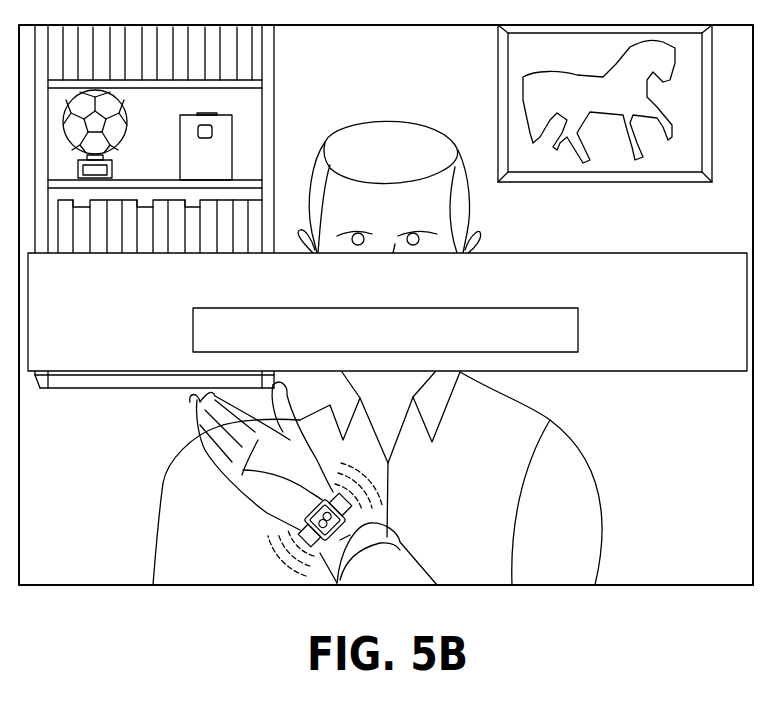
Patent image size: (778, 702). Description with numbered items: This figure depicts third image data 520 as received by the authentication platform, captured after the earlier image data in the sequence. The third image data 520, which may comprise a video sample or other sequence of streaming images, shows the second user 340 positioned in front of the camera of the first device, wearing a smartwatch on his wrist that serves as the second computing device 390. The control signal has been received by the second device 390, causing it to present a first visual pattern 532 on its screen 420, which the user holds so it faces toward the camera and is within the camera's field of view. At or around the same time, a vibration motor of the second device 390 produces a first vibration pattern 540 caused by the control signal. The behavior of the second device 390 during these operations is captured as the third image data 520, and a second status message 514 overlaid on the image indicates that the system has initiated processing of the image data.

The second user 340 is at (412, 108).
The second status message 514 is at (660, 373).
The screen 420 is at (267, 473).
The first visual pattern 532 is at (288, 504).
The second computing device 390 is at (356, 546).
The third image data 520 is at (93, 586).
The first vibration pattern 540 is at (260, 570).